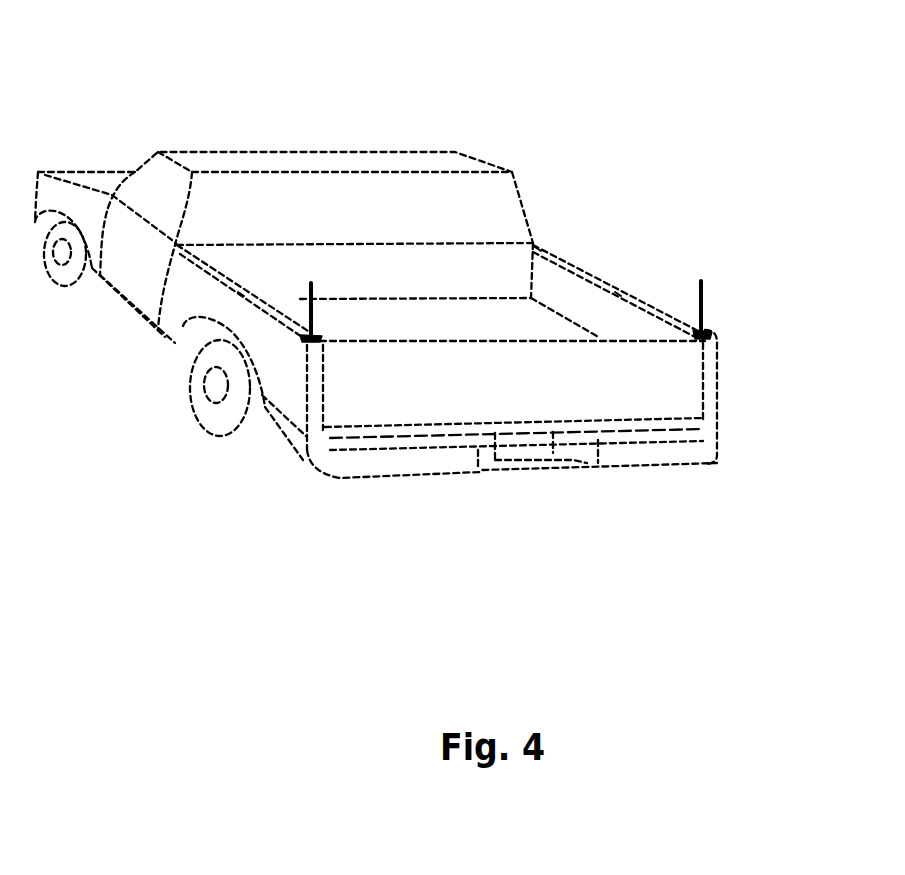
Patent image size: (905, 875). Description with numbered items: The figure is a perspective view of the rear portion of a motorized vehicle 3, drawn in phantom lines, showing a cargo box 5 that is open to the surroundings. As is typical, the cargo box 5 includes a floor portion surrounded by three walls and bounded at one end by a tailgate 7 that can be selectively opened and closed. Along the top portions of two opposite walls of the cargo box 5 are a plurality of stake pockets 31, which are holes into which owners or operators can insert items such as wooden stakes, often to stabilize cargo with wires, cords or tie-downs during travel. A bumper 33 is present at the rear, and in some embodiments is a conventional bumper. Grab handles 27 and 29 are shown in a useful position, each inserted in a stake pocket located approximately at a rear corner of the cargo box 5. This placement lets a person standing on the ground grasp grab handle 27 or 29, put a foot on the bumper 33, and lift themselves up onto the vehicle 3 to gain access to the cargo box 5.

The motorized vehicle 3 is at (337, 92).
The cargo box 5 is at (577, 292).
The tailgate 7 is at (662, 388).
The grab handle 27 is at (313, 296).
The grab handle 29 is at (703, 298).
The stake pockets 31 is at (190, 246).
The bumper 33 is at (618, 467).